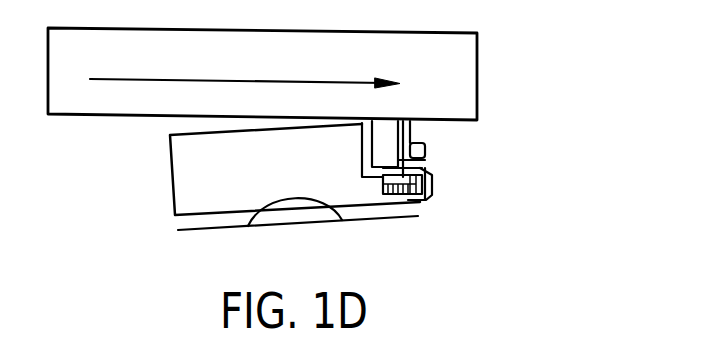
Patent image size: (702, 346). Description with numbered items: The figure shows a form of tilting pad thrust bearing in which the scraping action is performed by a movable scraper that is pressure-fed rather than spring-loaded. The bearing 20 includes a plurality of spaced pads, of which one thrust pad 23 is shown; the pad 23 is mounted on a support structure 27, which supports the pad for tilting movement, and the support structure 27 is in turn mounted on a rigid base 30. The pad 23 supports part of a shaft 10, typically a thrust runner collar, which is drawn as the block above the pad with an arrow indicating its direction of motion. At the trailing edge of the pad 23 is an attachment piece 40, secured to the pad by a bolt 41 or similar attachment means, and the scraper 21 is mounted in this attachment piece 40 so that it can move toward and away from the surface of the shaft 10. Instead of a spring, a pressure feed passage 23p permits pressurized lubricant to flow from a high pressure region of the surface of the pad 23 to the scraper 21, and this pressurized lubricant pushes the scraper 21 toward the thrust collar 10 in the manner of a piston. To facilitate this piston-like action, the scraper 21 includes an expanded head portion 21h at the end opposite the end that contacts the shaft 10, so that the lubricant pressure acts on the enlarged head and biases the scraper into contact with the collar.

The shaft 10 is at (463, 93).
The bearing 20 is at (166, 187).
The scraper 21 is at (412, 131).
The expanded head portion 21h is at (427, 159).
The thrust pad 23 is at (338, 165).
The pressure feed passage 23p is at (363, 137).
The support structure 27 is at (315, 218).
The base 30 is at (220, 232).
The attachment piece 40 is at (420, 200).
The bolt 41 is at (430, 180).